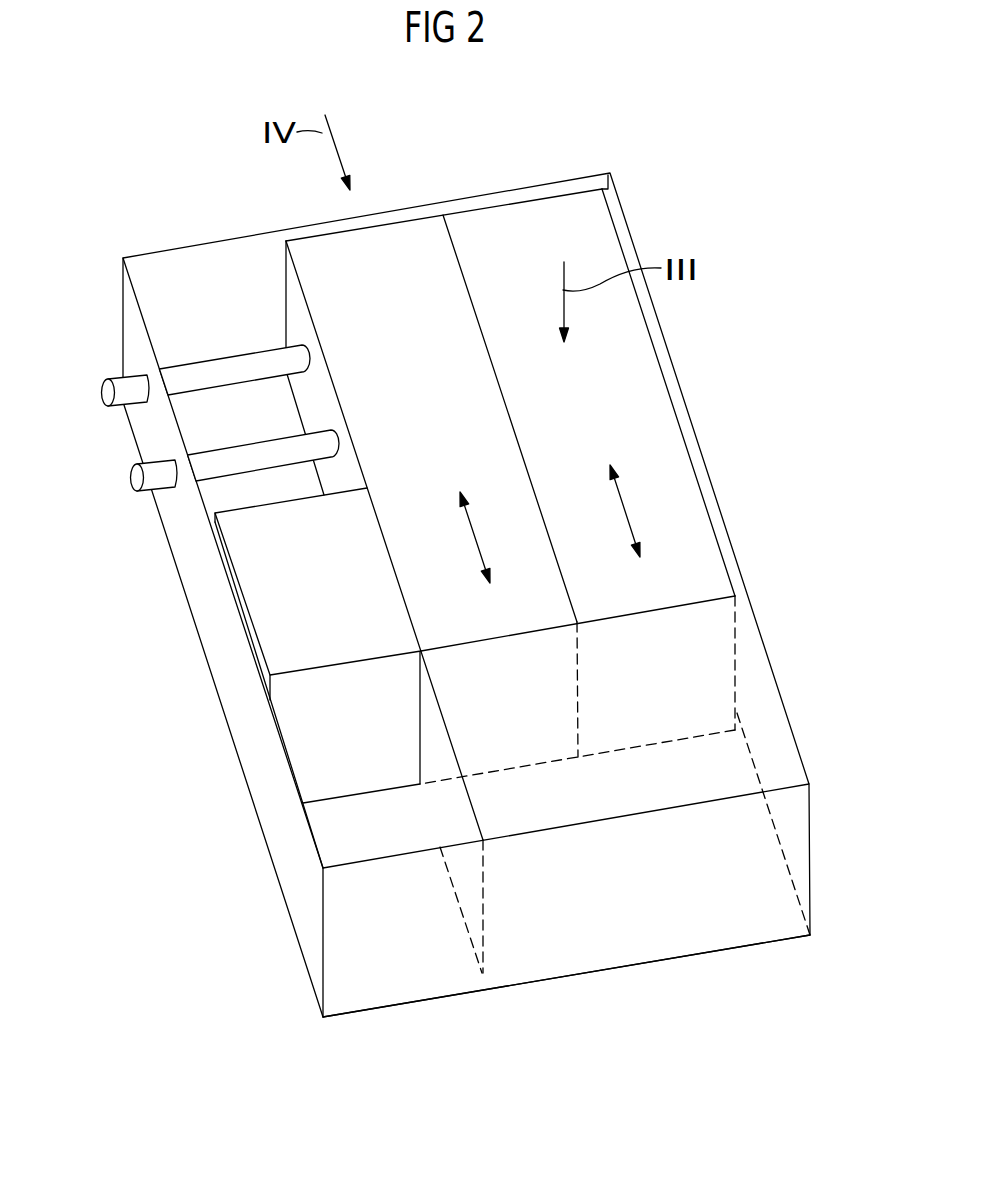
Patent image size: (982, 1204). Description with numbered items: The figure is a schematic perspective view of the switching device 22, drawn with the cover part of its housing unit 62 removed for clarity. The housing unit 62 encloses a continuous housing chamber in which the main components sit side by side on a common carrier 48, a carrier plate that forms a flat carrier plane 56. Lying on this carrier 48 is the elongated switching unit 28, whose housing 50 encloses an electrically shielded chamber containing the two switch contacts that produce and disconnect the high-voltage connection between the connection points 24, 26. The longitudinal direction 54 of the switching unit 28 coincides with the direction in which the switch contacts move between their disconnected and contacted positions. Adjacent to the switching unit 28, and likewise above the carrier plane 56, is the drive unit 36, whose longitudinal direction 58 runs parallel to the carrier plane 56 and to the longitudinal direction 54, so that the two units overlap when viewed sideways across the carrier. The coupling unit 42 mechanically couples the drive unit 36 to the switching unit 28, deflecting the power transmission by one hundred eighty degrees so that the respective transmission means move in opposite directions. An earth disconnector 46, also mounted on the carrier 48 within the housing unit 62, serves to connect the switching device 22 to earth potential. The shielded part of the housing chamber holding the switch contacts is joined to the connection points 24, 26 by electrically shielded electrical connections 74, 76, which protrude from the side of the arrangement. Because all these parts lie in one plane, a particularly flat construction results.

The switching device 22 is at (672, 155).
The connection point 24 is at (102, 392).
The connection point 26 is at (130, 477).
The switching unit 28 is at (403, 240).
The drive unit 36 is at (510, 222).
The coupling unit 42 is at (763, 707).
The earth disconnector 46 is at (263, 605).
The carrier 48 is at (197, 428).
The housing 50 is at (527, 743).
The longitudinal direction 54 is at (473, 528).
The carrier plane 56 is at (235, 398).
The longitudinal direction 58 is at (623, 503).
The housing unit 62 is at (737, 931).
The electrical connection 74 is at (262, 362).
The electrical connection 76 is at (208, 465).